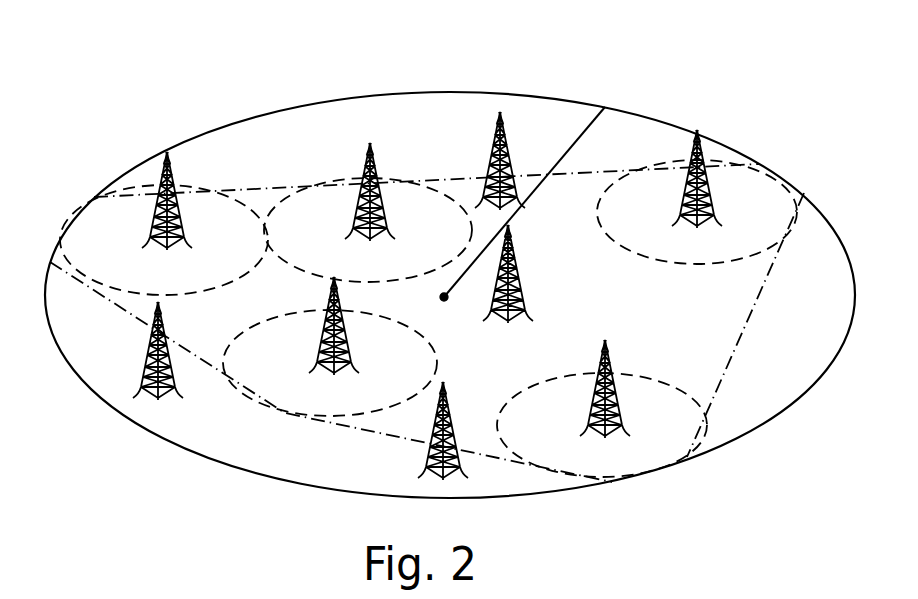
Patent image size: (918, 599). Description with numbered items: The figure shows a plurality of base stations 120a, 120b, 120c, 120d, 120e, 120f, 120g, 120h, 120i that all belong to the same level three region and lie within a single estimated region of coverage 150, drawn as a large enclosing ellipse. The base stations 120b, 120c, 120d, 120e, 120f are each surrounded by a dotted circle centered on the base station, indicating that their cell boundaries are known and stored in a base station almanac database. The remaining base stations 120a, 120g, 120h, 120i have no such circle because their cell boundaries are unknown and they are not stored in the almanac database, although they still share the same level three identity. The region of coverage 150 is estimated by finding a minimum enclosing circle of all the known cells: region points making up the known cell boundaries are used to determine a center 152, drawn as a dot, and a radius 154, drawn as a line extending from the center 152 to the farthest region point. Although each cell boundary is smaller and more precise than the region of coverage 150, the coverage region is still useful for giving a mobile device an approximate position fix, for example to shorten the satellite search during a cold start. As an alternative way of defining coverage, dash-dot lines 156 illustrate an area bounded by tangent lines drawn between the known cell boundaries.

The estimated region of coverage 150 is at (378, 92).
The center 152 is at (444, 297).
The radius 154 is at (586, 130).
The lines 156 is at (728, 373).
The base station 120a is at (501, 115).
The base station 120b is at (699, 130).
The base station 120c is at (606, 342).
The base station 120d is at (320, 333).
The base station 120e is at (166, 154).
The base station 120f is at (367, 155).
The base station 120g is at (525, 305).
The base station 120h is at (424, 460).
The base station 120i is at (150, 324).